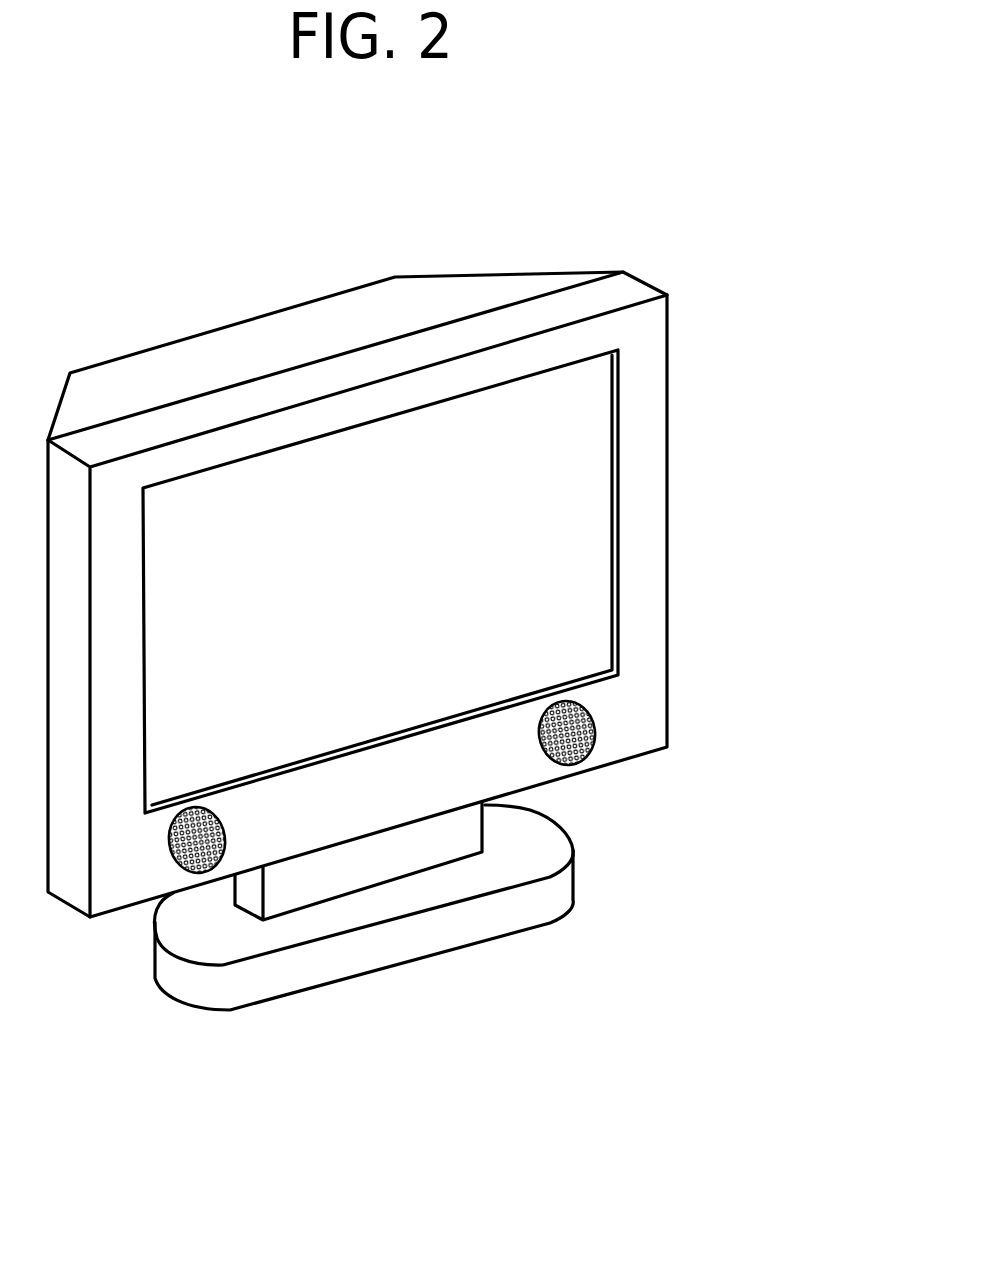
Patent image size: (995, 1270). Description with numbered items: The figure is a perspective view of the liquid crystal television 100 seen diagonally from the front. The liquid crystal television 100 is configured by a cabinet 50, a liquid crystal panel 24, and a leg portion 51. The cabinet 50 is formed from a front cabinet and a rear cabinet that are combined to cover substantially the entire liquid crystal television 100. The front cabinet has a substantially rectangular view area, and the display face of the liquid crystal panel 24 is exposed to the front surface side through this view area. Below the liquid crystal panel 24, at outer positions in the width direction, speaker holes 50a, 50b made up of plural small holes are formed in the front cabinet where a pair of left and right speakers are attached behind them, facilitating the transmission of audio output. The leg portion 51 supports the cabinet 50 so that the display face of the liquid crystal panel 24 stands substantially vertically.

The liquid crystal television 100 is at (638, 275).
The cabinet 50 is at (667, 413).
The liquid crystal panel 24 is at (583, 570).
The speaker hole 50a is at (595, 728).
The speaker hole 50b is at (200, 857).
The leg portion 51 is at (555, 853).